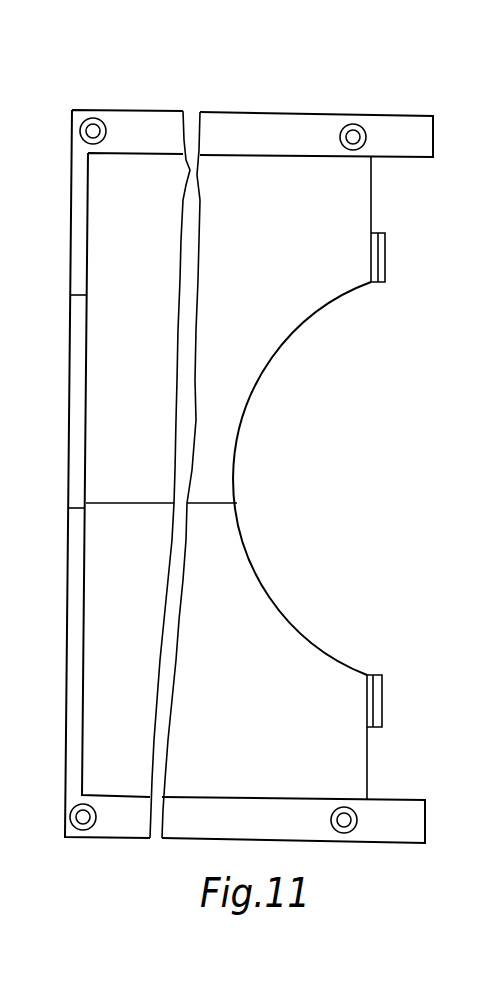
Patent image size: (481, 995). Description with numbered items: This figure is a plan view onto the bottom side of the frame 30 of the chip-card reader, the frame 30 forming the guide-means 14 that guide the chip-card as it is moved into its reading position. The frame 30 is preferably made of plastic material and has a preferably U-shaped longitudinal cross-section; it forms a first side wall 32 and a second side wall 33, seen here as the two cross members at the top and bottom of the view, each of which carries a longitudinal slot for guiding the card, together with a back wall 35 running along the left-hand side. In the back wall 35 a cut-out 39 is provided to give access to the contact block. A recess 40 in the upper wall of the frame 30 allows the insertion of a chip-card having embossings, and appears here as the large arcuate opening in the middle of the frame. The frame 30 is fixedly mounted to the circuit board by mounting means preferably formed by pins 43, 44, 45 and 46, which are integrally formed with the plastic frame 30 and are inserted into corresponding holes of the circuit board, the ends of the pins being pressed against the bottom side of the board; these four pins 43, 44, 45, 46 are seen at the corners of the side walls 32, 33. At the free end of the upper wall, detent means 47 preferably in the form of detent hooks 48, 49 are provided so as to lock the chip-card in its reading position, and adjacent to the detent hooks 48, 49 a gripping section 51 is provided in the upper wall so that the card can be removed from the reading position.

The guide-means 14 is at (117, 100).
The frame 30 is at (161, 104).
The first side wall 32 is at (262, 125).
The second side wall 33 is at (238, 815).
The back wall 35 is at (75, 595).
The cut-out 39 is at (80, 298).
The recess 40 is at (218, 504).
The pin 43 is at (95, 135).
The pin 44 is at (88, 804).
The pin 45 is at (350, 150).
The pin 46 is at (340, 807).
The detent means 47 is at (350, 703).
The detent hook 48 is at (384, 714).
The detent hook 49 is at (385, 260).
The gripping section 51 is at (305, 632).